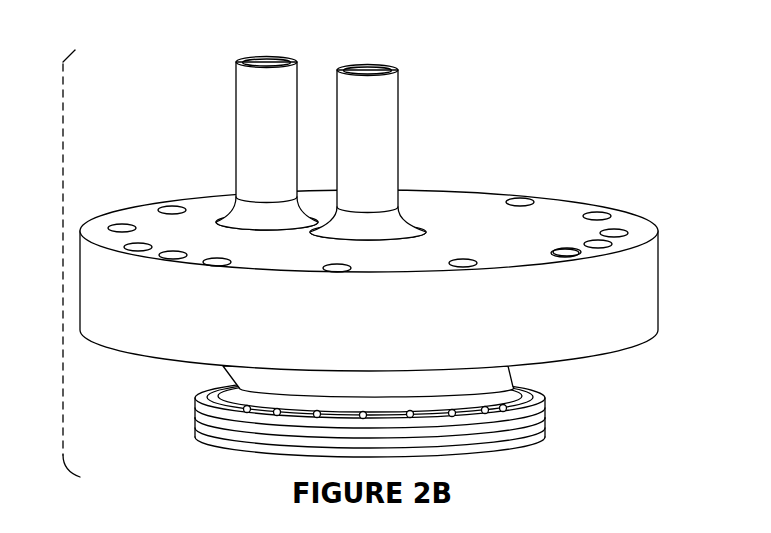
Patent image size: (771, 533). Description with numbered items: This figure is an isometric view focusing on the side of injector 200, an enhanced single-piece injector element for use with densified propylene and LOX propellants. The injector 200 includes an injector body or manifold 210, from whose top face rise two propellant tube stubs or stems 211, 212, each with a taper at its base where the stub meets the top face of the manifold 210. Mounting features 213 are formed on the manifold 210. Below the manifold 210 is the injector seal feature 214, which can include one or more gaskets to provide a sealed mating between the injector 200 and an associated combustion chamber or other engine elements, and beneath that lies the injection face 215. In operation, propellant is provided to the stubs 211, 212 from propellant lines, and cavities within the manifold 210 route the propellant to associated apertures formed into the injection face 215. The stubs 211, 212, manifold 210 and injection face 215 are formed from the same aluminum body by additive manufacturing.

The injector 200 is at (164, 116).
The injector body or manifold 210 is at (606, 327).
The propellant tube stub 211 is at (308, 60).
The propellant tube stub 212 is at (412, 78).
The mounting features 213 is at (645, 229).
The injector seal feature 214 is at (555, 416).
The injection face 215 is at (548, 449).